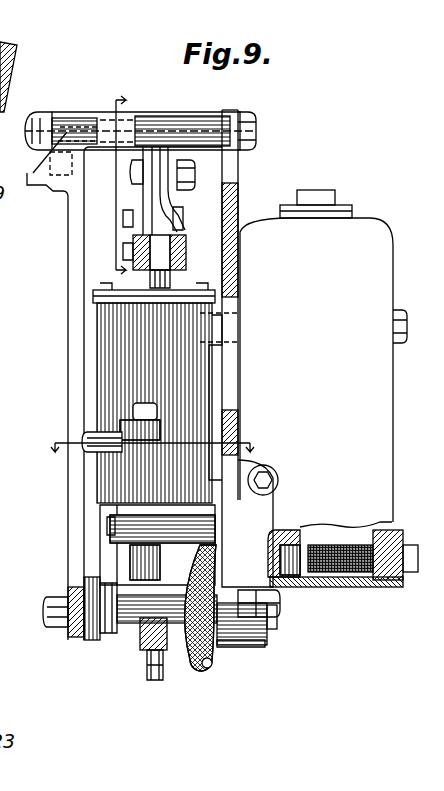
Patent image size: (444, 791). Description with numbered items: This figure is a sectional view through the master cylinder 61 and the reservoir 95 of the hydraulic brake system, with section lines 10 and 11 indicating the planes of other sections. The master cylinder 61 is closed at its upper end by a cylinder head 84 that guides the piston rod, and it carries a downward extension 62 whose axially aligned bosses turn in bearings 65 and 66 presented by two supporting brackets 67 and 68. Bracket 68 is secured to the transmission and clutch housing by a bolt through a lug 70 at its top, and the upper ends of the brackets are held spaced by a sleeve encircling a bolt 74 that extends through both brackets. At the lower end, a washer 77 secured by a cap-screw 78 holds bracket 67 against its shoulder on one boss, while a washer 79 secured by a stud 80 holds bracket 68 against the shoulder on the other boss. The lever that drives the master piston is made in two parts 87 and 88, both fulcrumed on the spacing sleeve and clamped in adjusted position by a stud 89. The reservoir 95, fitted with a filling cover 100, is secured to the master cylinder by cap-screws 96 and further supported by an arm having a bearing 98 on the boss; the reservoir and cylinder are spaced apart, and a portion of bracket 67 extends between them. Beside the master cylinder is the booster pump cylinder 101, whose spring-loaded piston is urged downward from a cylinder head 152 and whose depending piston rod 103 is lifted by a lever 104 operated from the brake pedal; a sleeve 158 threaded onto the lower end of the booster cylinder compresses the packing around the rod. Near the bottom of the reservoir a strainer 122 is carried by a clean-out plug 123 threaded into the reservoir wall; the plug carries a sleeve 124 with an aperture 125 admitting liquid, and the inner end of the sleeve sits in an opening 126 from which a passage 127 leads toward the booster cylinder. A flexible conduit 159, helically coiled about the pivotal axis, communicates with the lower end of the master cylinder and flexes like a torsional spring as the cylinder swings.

The section line 10- 10 is at (106, 182).
The section line 11- 11 is at (150, 445).
The master cylinder 61 is at (104, 368).
The downward extension 62 is at (108, 548).
The bearing 65 is at (238, 645).
The bearing 66 is at (84, 640).
The supporting bracket 67 is at (240, 372).
The supporting bracket 68 is at (73, 333).
The lug 70 is at (43, 186).
The bolt 74 is at (252, 137).
The washer 77 is at (270, 636).
The cap-screw 78 is at (276, 614).
The washer 79 is at (68, 632).
The stud 80 is at (47, 612).
The cylinder head 84 is at (100, 298).
The lever part 87 is at (143, 193).
The lever part 88 is at (170, 200).
The stud 89 is at (190, 175).
The reservoir 95 is at (385, 246).
The cap-screw 96 is at (400, 318).
The bearing 98 is at (252, 646).
The filling cover 100 is at (318, 203).
The pump cylinder 101 is at (135, 476).
The piston rod 103 is at (138, 622).
The lever 104 is at (146, 658).
The strainer 122 is at (335, 575).
The clean-out plug 123 is at (408, 575).
The sleeve 124 is at (322, 511).
The aperture 125 is at (393, 532).
The opening 126 is at (278, 536).
The passage 127 is at (266, 550).
The cylinder head 152 is at (140, 409).
The sleeve 158 is at (135, 567).
The flexible conduit 159 is at (200, 668).